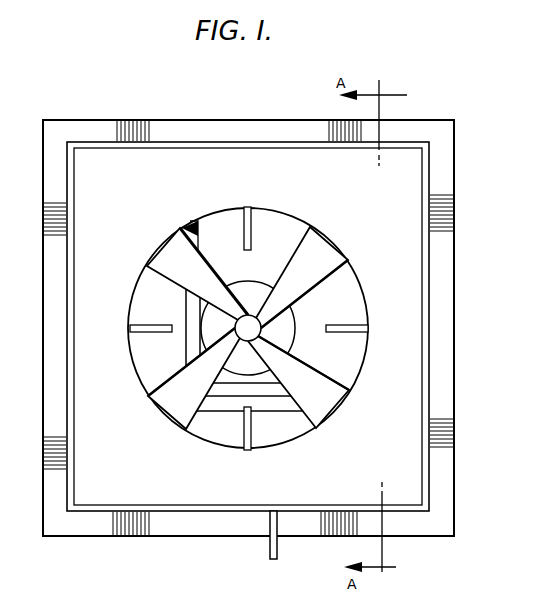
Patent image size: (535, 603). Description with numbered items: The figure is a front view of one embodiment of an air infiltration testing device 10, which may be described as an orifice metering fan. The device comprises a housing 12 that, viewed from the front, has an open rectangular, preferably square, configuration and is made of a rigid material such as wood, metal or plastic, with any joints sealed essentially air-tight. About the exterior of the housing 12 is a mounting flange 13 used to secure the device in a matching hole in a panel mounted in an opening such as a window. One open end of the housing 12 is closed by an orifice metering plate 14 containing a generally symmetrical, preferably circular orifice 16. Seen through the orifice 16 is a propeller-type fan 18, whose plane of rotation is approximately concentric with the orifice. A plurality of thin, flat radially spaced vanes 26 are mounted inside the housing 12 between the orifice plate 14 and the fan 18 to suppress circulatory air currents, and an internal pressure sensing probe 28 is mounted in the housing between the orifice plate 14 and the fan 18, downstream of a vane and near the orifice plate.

The air infiltration testing device 10 is at (480, 346).
The housing 12 is at (72, 404).
The mounting flange 13 is at (412, 128).
The orifice metering plate 14 is at (410, 455).
The orifice 16 is at (293, 212).
The propeller-type fan 18 is at (177, 243).
The vanes 26 is at (345, 323).
The internal pressure sensing probe 28 is at (270, 552).